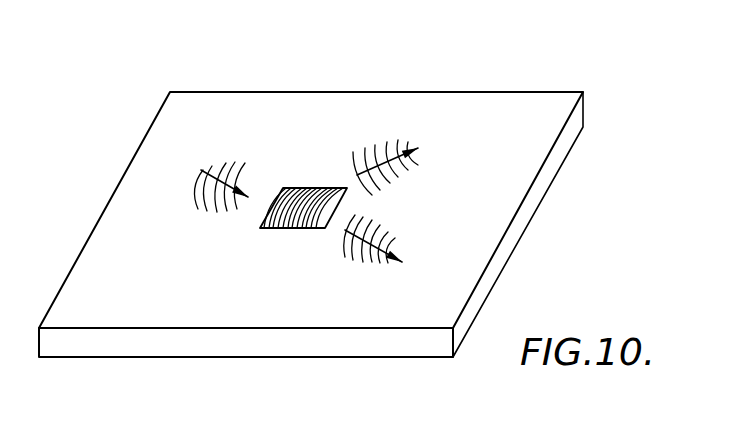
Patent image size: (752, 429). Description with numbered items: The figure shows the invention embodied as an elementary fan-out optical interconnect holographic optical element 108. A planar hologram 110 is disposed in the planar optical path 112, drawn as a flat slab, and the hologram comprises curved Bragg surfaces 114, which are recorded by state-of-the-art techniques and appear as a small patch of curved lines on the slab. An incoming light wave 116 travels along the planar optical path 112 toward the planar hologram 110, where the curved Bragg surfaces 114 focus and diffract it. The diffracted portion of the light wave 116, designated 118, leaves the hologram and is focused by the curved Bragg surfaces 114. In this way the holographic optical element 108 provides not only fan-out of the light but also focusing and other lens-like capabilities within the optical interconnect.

The fan-out optical interconnect holographic optical element 108 is at (529, 72).
The planar hologram 110 is at (343, 186).
The planar optical path 112 is at (537, 105).
The curved Bragg surfaces 114 is at (308, 200).
The incoming light wave 116 is at (228, 168).
The diffracted portion of the light wave 118 is at (400, 170).